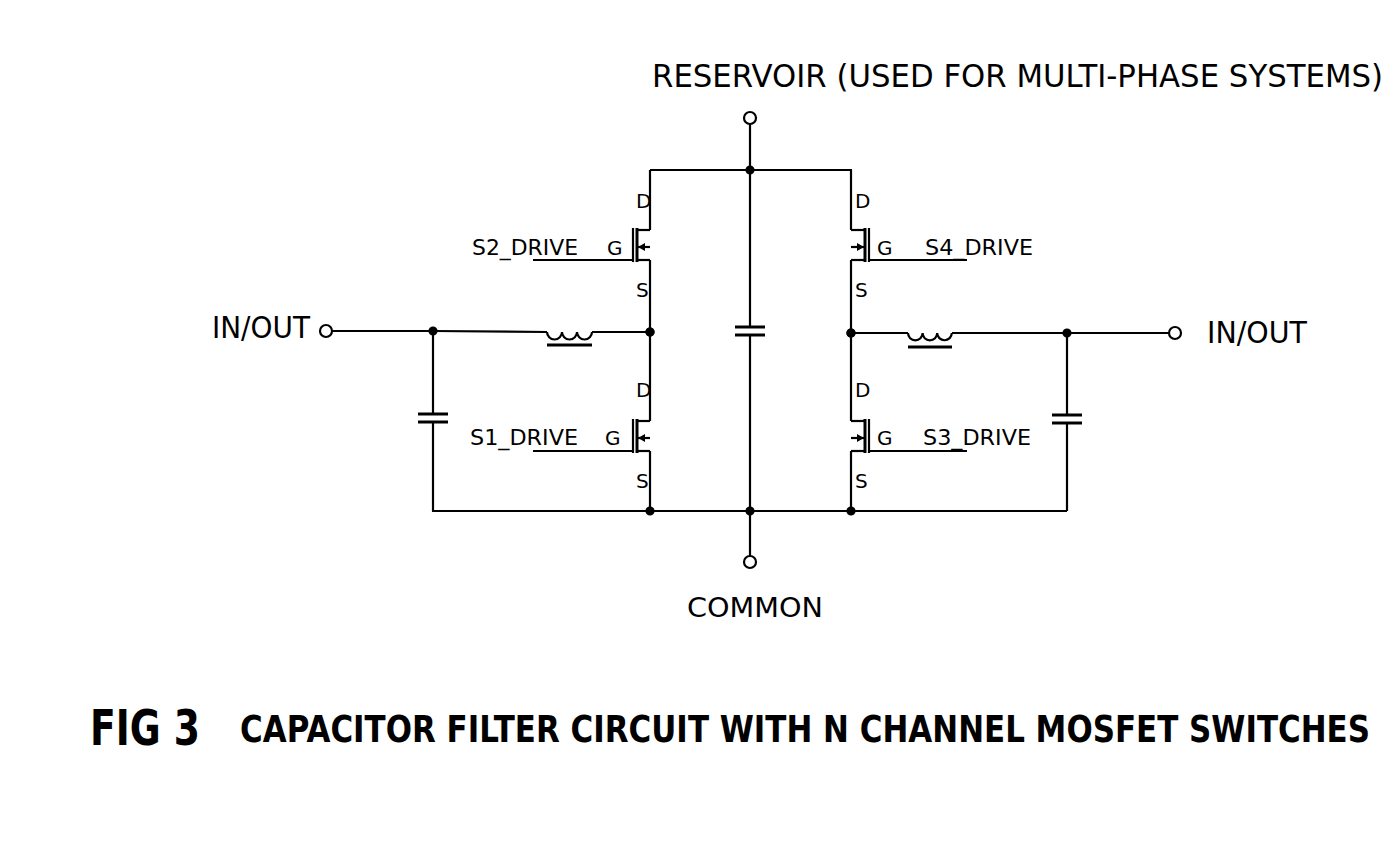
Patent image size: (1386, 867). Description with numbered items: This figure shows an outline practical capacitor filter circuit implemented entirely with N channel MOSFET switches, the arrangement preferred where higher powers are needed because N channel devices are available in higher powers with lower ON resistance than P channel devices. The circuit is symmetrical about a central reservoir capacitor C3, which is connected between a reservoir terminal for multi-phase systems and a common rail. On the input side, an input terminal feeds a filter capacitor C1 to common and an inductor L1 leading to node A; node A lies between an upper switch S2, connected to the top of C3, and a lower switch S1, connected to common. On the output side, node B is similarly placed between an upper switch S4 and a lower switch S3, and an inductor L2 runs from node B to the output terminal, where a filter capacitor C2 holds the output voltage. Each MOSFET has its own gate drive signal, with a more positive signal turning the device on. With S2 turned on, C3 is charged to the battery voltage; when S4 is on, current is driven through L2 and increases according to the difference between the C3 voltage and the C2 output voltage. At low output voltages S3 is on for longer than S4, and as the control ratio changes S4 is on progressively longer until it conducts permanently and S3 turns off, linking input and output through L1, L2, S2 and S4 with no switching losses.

The switch S1 is at (615, 421).
The switch S2 is at (616, 251).
The switch S3 is at (888, 422).
The switch S4 is at (889, 251).
The capacitor C1 is at (450, 421).
The capacitor C2 is at (1086, 422).
The capacitor C3 is at (768, 340).
The inductor L1 is at (572, 314).
The inductor L2 is at (933, 316).
The node A is at (670, 327).
The node B is at (840, 327).